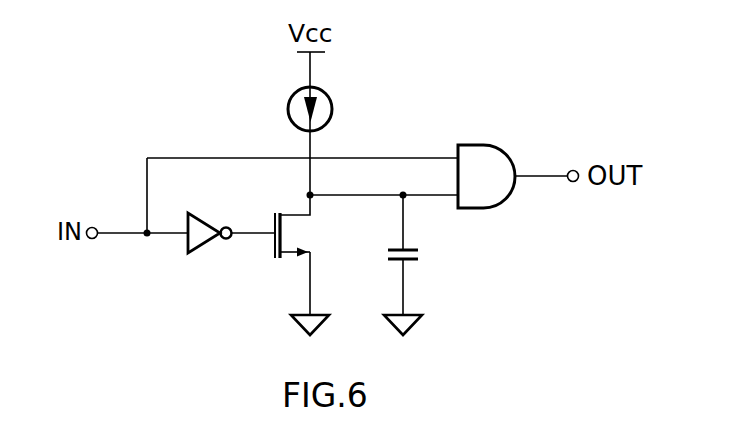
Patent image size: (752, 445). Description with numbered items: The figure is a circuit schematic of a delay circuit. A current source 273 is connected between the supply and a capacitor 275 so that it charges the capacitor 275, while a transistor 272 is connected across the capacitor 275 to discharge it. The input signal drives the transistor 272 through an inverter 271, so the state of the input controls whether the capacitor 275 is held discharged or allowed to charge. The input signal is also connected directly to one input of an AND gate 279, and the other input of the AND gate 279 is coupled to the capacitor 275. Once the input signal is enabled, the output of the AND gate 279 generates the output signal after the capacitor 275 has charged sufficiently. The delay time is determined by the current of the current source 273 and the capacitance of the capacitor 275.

The inverter 271 is at (208, 243).
The transistor 272 is at (308, 228).
The current source 273 is at (333, 98).
The capacitor 275 is at (422, 252).
The AND gate 279 is at (470, 143).